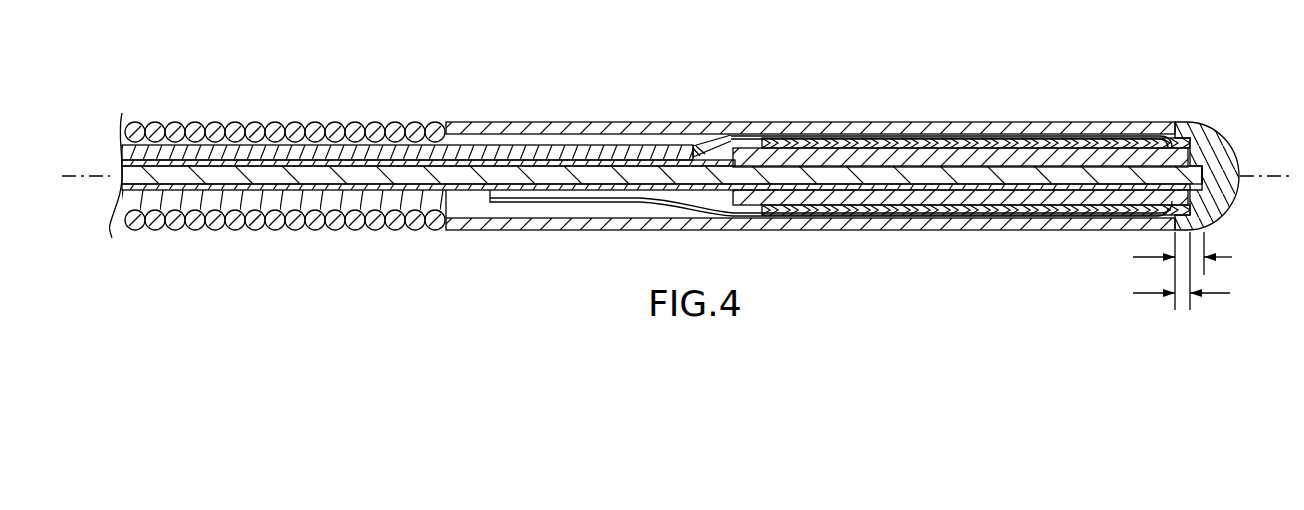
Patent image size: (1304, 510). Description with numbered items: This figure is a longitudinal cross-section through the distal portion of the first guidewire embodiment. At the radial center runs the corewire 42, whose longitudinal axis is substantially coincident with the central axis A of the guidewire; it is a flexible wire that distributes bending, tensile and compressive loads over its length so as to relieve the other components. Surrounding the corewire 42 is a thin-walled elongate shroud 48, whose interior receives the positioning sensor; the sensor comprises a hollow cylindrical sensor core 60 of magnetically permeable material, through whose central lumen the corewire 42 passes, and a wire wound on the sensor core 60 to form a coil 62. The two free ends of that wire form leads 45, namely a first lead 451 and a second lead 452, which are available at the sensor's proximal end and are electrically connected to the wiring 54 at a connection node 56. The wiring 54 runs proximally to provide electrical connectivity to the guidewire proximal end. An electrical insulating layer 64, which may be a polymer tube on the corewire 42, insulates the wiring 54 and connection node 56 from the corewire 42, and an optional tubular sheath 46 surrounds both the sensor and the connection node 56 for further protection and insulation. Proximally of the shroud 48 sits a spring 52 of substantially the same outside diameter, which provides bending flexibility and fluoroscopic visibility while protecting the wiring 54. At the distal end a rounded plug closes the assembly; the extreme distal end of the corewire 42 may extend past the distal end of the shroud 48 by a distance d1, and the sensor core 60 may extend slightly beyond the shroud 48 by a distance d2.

The corewire 42 is at (1193, 170).
The leads 45 is at (727, 145).
The first lead 451 is at (976, 143).
The second lead 452 is at (976, 210).
The sheath 46 is at (578, 203).
The shroud 48 is at (545, 122).
The spring 52 is at (276, 215).
The wiring 54 is at (245, 150).
The connection node 56 is at (703, 135).
The sensor core 60 is at (1020, 196).
The coil 62 is at (975, 207).
The electrical insulating layer 64 is at (652, 190).
The central axis A is at (1277, 176).
The distance d1 is at (1199, 271).
The distance d2 is at (1194, 271).